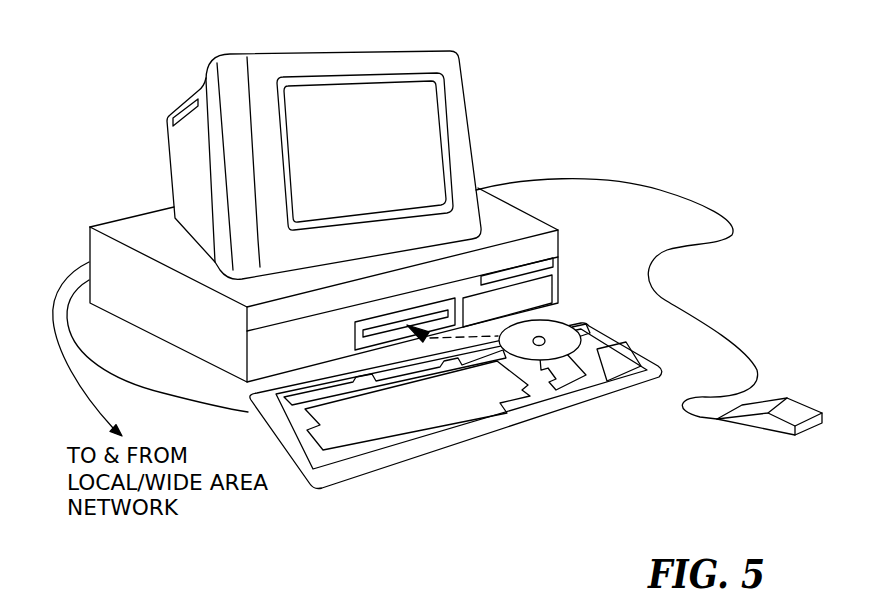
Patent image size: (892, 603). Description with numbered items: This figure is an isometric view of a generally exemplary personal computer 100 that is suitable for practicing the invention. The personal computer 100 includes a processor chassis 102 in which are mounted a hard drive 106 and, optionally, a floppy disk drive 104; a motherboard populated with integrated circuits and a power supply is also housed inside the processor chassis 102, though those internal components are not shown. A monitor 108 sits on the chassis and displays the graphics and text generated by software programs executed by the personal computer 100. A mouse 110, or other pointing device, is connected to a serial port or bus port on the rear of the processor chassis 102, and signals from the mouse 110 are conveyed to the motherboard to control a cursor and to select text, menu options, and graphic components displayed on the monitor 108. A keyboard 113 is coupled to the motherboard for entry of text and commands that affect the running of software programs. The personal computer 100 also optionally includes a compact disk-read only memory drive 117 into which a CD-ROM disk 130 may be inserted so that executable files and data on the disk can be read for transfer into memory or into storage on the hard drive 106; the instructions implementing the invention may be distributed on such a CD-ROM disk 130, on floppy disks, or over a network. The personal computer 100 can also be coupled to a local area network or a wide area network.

The personal computer 100 is at (475, 294).
The processor chassis 102 is at (369, 284).
The floppy disk drive 104 is at (508, 267).
The hard drive 106 is at (528, 295).
The monitor 108 is at (468, 110).
The mouse 110 is at (798, 436).
The keyboard 113 is at (550, 418).
The compact disk-read only memory (CD-ROM) drive 117 is at (355, 331).
The CD-ROM disk 130 is at (579, 346).